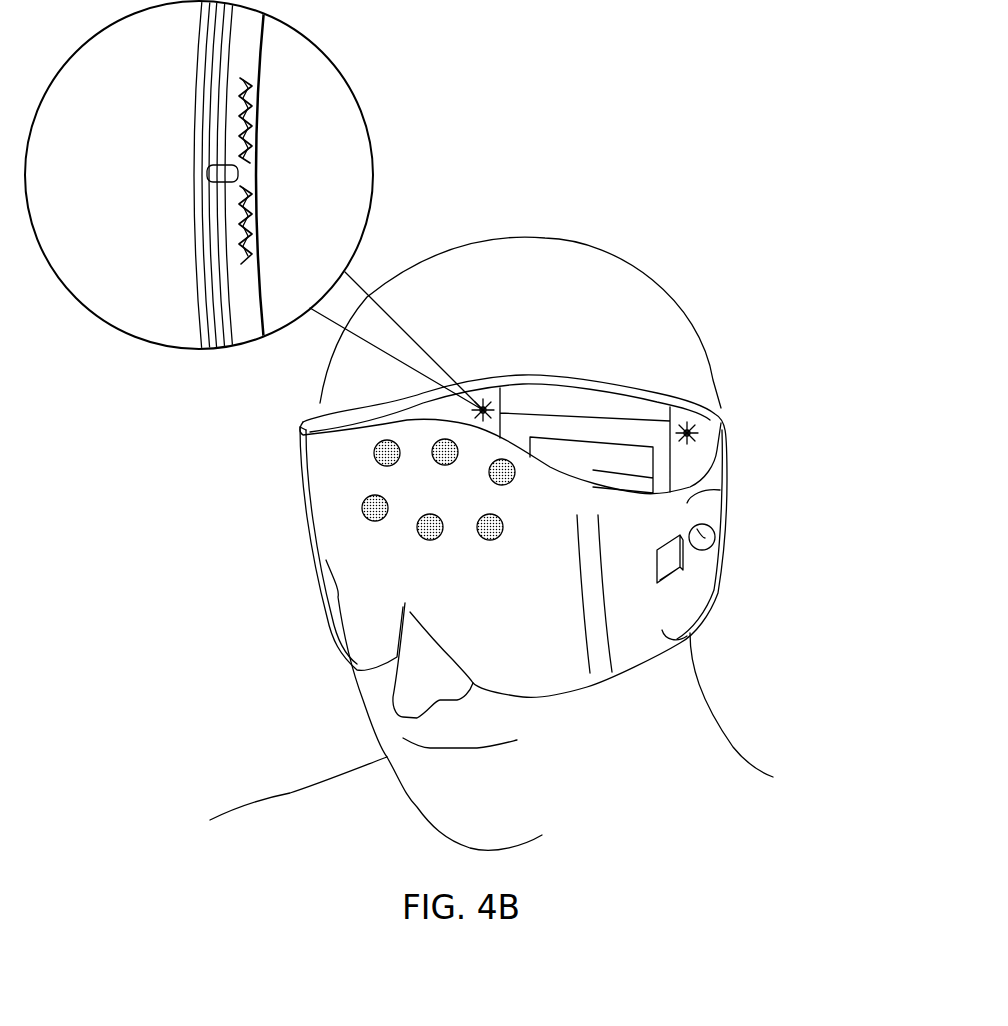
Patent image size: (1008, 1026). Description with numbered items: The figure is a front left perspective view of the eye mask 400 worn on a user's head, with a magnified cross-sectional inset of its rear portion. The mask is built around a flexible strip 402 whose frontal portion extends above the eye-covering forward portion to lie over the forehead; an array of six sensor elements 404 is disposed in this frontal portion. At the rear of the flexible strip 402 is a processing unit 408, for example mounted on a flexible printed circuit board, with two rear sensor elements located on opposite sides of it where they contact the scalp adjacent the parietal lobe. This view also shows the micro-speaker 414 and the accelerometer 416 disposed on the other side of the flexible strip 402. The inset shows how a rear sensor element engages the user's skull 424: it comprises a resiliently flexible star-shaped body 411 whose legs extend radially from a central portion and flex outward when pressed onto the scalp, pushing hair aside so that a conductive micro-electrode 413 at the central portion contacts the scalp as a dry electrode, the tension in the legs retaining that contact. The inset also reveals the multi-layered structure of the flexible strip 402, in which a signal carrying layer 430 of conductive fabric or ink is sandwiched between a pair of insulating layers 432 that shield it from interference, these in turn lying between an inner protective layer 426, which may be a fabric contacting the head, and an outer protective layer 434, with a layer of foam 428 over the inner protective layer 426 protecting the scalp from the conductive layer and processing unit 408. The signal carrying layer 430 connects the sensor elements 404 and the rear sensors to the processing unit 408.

The eye mask 400 is at (247, 657).
The flexible strip 402 is at (540, 663).
The sensor elements 404 is at (363, 511).
The processing unit 408 is at (588, 445).
The star-shaped body 411 is at (253, 210).
The conductive micro-electrode 413 is at (216, 173).
The micro-speaker 414 is at (712, 547).
The accelerometer 416 is at (677, 573).
The skull 424 is at (326, 198).
The inner protective layer 426 is at (232, 313).
The layer of foam 428 is at (213, 255).
The signal carrying layer 430 is at (203, 118).
The insulating layers 432 is at (203, 91).
The outer protective layer 434 is at (196, 208).